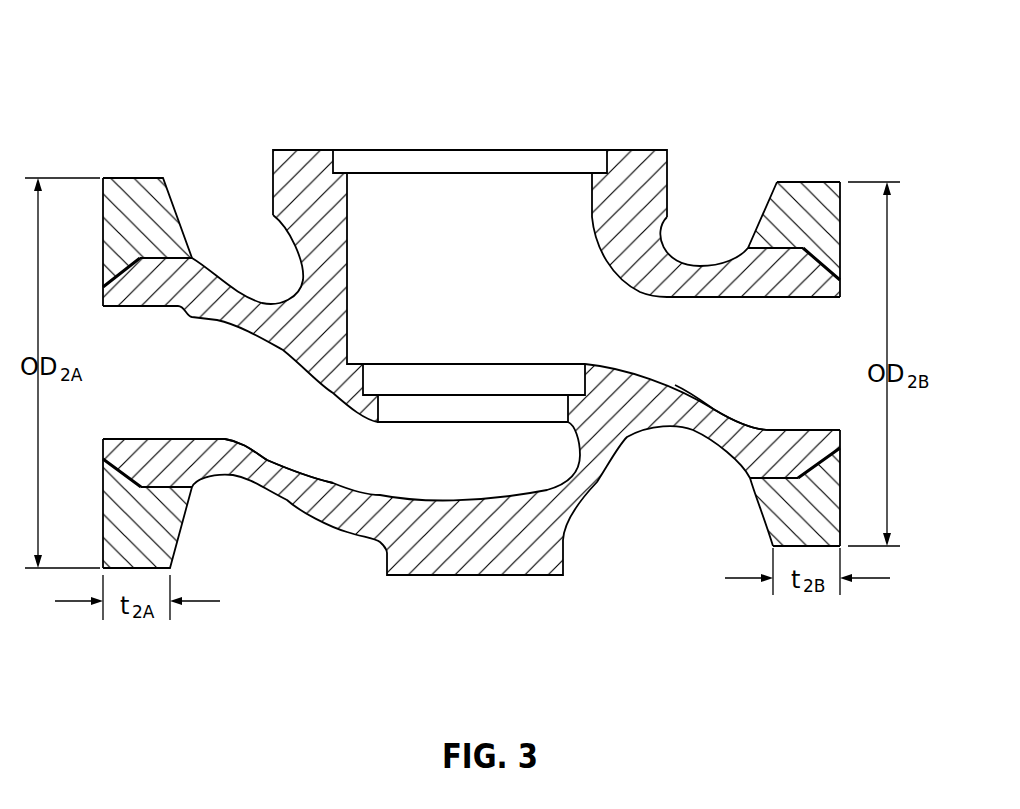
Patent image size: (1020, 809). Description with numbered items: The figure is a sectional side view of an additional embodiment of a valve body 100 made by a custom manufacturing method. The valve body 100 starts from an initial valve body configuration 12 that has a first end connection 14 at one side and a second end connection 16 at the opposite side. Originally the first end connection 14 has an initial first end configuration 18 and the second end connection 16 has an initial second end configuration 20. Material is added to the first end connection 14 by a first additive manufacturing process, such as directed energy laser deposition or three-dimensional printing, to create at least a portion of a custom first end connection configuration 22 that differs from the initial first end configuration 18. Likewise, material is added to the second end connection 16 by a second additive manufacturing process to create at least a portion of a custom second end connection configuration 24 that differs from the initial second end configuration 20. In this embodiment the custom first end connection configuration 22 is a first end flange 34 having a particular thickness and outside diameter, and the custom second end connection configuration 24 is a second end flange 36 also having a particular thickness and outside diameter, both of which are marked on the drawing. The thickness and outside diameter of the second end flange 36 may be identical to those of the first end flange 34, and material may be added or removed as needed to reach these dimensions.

The valve body 100 is at (371, 58).
The initial valve body configuration 12 is at (627, 149).
The first end connection 14 is at (152, 116).
The second end connection 16 is at (838, 134).
The initial first end configuration 18 is at (140, 459).
The initial second end configuration 20 is at (753, 467).
The custom first end connection configuration 22 is at (188, 158).
The custom second end connection configuration 24 is at (712, 552).
The first end flange 34 is at (108, 157).
The second end flange 36 is at (784, 147).